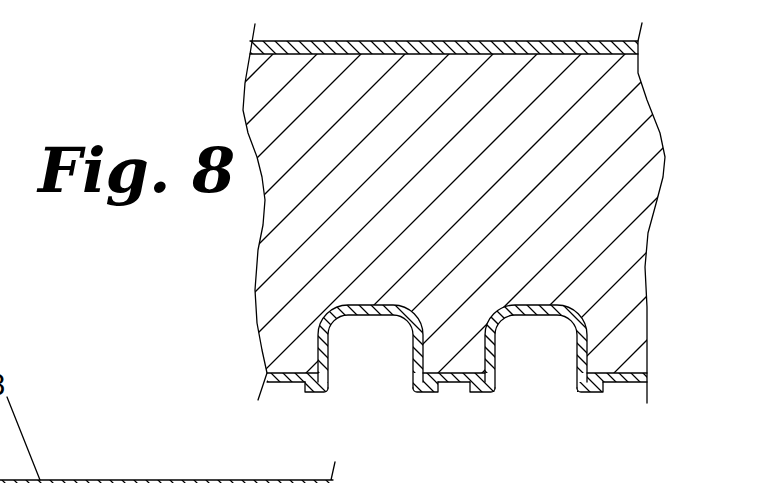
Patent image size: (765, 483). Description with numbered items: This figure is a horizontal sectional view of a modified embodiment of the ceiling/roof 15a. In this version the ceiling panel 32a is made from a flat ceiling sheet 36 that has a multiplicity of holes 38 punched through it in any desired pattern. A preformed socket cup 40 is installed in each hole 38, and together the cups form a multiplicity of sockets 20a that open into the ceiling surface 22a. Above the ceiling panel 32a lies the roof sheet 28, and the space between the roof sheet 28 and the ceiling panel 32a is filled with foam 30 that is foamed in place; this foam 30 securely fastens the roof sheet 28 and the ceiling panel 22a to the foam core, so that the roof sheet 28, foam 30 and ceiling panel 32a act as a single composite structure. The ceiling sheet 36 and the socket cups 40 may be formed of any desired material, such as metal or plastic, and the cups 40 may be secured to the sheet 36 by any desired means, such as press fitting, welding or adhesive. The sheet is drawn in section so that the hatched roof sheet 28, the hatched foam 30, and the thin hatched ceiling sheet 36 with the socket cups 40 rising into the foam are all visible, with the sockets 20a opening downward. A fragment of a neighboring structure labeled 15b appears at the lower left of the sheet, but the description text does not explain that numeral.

The ceiling/roof 15a is at (479, 36).
The second sheet member surface 15b is at (138, 470).
The socket 20a is at (565, 371).
The ceiling surface 22a is at (455, 387).
The roof sheet 28 is at (312, 42).
The foam 30 is at (625, 265).
The ceiling panel 32a is at (505, 412).
The ceiling sheet 36 is at (287, 381).
The hole 38 is at (332, 376).
The socket cup 40 is at (497, 372).